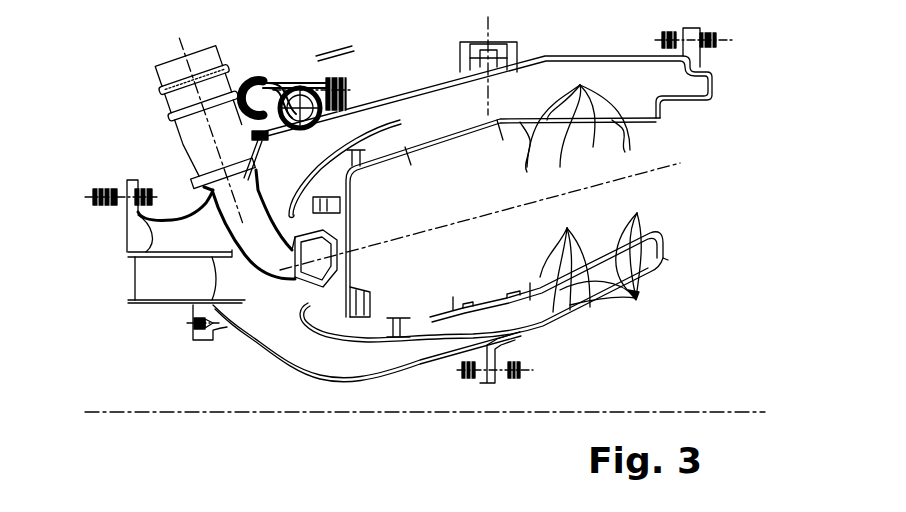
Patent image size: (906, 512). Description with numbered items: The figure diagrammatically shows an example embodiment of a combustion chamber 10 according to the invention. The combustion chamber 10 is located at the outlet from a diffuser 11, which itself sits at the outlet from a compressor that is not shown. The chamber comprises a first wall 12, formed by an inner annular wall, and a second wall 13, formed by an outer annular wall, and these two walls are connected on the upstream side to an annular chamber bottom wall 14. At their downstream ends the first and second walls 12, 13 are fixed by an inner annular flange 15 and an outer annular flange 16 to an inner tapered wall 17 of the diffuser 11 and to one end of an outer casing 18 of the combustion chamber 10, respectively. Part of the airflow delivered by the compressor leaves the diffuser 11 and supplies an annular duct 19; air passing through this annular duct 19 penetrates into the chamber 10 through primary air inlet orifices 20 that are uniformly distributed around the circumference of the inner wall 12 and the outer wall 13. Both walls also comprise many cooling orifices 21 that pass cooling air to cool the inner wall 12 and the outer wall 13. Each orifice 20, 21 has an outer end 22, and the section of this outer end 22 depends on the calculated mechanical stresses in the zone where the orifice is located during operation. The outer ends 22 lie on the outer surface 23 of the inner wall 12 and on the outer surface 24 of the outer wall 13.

The combustion chamber 10 is at (505, 228).
The diffuser 11 is at (248, 348).
The first wall 12 is at (597, 257).
The second wall 13 is at (562, 124).
The annular chamber bottom wall 14 is at (343, 305).
The inner annular flange 15 is at (542, 326).
The outer annular flange 16 is at (710, 77).
The inner tapered wall 17 is at (417, 367).
The outer casing 18 is at (618, 56).
The annular duct 19 is at (400, 199).
The primary air inlet orifices 20 is at (410, 170).
The cooling orifices 21 is at (585, 216).
The outer end 22 is at (412, 150).
The outer surface of the inner wall 23 is at (565, 308).
The outer surface of the outer wall 24 is at (546, 57).